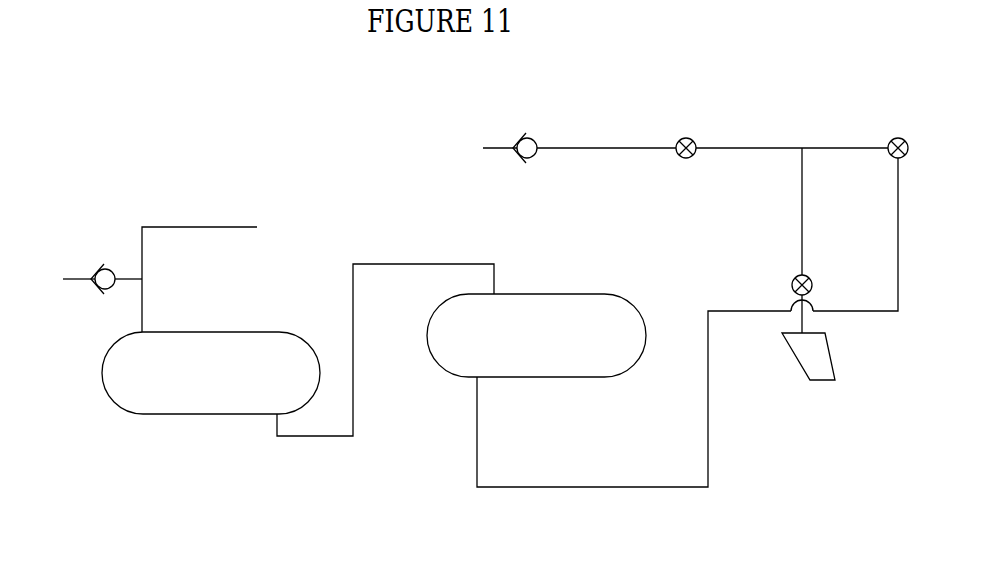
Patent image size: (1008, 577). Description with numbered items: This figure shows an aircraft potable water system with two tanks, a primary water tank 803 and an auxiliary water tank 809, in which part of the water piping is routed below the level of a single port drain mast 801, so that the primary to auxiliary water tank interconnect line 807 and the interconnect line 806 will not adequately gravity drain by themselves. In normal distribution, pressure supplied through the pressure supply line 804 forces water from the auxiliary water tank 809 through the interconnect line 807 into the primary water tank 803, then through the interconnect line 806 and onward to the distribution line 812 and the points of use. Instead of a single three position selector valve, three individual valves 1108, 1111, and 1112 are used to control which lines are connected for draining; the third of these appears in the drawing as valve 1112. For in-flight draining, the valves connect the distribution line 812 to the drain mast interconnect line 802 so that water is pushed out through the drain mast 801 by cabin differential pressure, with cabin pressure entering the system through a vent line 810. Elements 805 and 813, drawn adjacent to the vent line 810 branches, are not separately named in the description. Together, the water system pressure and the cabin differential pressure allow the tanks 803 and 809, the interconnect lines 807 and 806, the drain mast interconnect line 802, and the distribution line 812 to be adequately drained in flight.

The drain mast 801 is at (828, 347).
The drain mast interconnect line 802 is at (800, 238).
The primary water tank 803 is at (542, 377).
The pressure supply line 804 is at (200, 227).
The check valve 805 is at (99, 268).
The interconnect line 806 is at (593, 487).
The primary to auxiliary water tank interconnect line 807 is at (315, 436).
The auxiliary water tank 809 is at (210, 414).
The vent line 810 is at (75, 277).
The distribution line 812 is at (668, 150).
The check valve 813 is at (517, 138).
The individual valve 1108 is at (697, 137).
The individual valve 1111 is at (888, 135).
The valve 1112 is at (810, 275).